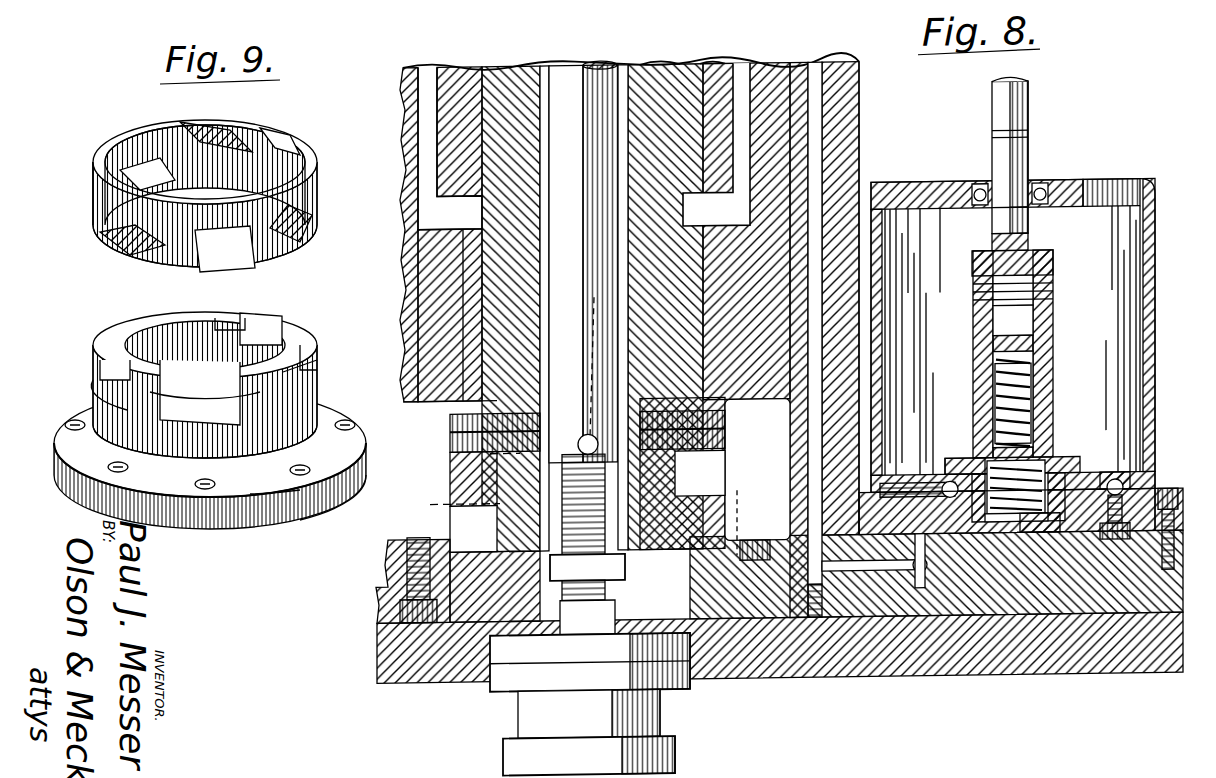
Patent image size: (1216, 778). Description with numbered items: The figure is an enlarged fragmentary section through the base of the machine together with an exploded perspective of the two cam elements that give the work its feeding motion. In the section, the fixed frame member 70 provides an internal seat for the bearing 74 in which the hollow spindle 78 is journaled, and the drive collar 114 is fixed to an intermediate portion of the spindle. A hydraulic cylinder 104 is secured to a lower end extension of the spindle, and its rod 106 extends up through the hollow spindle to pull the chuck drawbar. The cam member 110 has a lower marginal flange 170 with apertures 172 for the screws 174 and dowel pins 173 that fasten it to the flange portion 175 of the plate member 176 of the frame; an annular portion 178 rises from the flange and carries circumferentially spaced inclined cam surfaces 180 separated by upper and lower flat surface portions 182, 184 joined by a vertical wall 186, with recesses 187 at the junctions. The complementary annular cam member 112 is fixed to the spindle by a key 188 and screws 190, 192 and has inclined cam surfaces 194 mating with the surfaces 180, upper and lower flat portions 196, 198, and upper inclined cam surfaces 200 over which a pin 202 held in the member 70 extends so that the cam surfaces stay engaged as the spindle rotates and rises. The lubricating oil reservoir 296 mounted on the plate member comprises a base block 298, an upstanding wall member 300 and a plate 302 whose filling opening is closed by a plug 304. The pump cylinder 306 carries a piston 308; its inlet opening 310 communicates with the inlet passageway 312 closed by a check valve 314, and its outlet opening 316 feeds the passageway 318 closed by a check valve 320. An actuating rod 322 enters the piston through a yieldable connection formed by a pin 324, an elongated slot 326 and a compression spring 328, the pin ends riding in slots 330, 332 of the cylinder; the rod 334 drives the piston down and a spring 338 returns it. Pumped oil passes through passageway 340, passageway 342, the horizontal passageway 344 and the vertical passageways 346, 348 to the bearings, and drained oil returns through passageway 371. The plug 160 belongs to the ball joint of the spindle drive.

In FIG. 8, the fixed member 70 is at (840, 98).
In FIG. 8, the bearing 74 is at (695, 232).
In FIG. 8, the hollow spindle 78 is at (665, 68).
In FIG. 8, the hydraulic cylinder 104 is at (668, 755).
In FIG. 8, the rod 106 is at (568, 68).
In FIG. 8, the cam member 110 is at (448, 530).
In FIG. 9, the cam member 110 is at (294, 527).
In FIG. 8, the annular cam member 112 is at (448, 425).
In FIG. 9, the annular cam member 112 is at (295, 262).
In FIG. 8, the drive collar 114 is at (715, 68).
In FIG. 9, the plug 160 is at (270, 340).
In FIG. 8, the lower marginal flange 170 is at (780, 663).
In FIG. 9, the lower marginal flange 170 is at (222, 525).
In FIG. 9, the apertures 172 is at (203, 490).
In FIG. 8, the dowel pins 173 is at (754, 515).
In FIG. 8, the screws 174 is at (410, 612).
In FIG. 8, the flange portion 175 is at (392, 556).
In FIG. 8, the plate member 176 is at (1165, 620).
In FIG. 9, the annular portion 178 is at (122, 408).
In FIG. 9, the inclined cam surfaces 180 is at (128, 328).
In FIG. 9, the upper flat surface portions 182 is at (318, 355).
In FIG. 9, the lower flat surface portions 184 is at (206, 408).
In FIG. 9, the vertical wall 186 is at (300, 392).
In FIG. 9, the recess 187 is at (268, 495).
In FIG. 8, the key 188 is at (445, 506).
In FIG. 8, the screw 190 is at (450, 466).
In FIG. 8, the screw 192 is at (705, 428).
In FIG. 9, the inclined cam surfaces 194 is at (228, 124).
In FIG. 9, the upper flat surface portions 196 is at (105, 160).
In FIG. 9, the lower flat surface portions 198 is at (255, 338).
In FIG. 9, the inclined cam surfaces 200 is at (283, 138).
In FIG. 8, the pin 202 is at (592, 395).
In FIG. 8, the lubricating oil reservoir 296 is at (1158, 222).
In FIG. 8, the base block 298 is at (1115, 482).
In FIG. 8, the upstanding wall member 300 is at (1156, 380).
In FIG. 8, the plate 302 is at (1072, 189).
In FIG. 8, the plug 304 is at (1112, 189).
In FIG. 8, the lubricating oil pump cylinder 306 is at (1045, 372).
In FIG. 8, the piston 308 is at (1045, 400).
In FIG. 8, the inlet opening 310 is at (1075, 630).
In FIG. 8, the inlet passageway 312 is at (1040, 545).
In FIG. 8, the check valve 314 is at (1130, 492).
In FIG. 8, the outlet opening 316 is at (1000, 532).
In FIG. 8, the passageway 318 is at (990, 532).
In FIG. 8, the check valve 320 is at (960, 466).
In FIG. 8, the actuating rod 322 is at (1020, 230).
In FIG. 8, the pin 324 is at (1043, 302).
In FIG. 8, the elongated slot 326 is at (985, 338).
In FIG. 8, the compression spring 328 is at (1040, 438).
In FIG. 8, the elongated slot 330 is at (972, 268).
In FIG. 8, the elongated slot 332 is at (1055, 320).
In FIG. 8, the rod 334 is at (1018, 105).
In FIG. 8, the spring 338 is at (1040, 545).
In FIG. 8, the passageway 340 is at (912, 490).
In FIG. 8, the passageway 342 is at (960, 580).
In FIG. 8, the horizontal passageway 344 is at (880, 600).
In FIG. 8, the passageway 346 is at (812, 625).
In FIG. 8, the passageway 348 is at (818, 168).
In FIG. 8, the passageway 371 is at (768, 548).